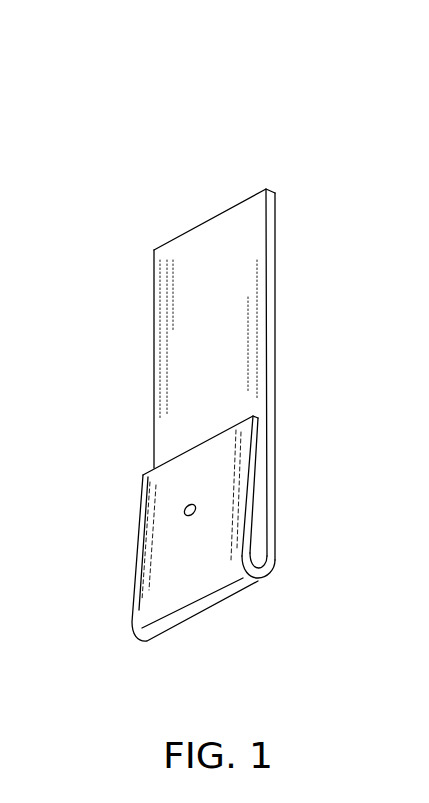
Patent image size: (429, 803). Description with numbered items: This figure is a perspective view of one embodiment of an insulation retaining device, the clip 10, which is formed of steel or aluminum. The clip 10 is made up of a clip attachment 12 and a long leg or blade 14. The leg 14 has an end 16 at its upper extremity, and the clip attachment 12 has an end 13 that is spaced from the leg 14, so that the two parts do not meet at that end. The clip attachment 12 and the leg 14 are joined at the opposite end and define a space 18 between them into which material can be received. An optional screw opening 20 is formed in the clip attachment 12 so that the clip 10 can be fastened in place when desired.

The clip 10 is at (213, 331).
The clip attachment 12 is at (205, 486).
The end of clip attachment 13 is at (206, 440).
The leg 14 is at (265, 339).
The end 16 is at (210, 220).
The space 18 is at (258, 535).
The screw opening 20 is at (185, 513).